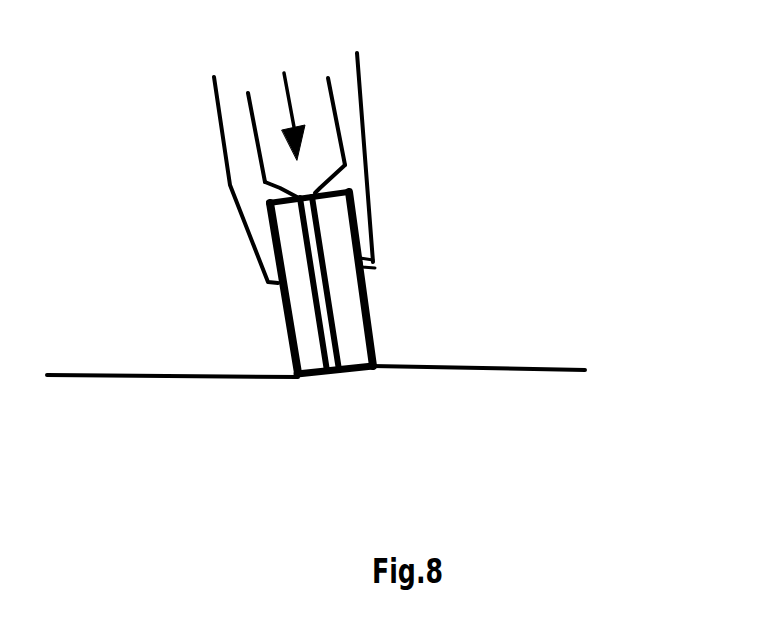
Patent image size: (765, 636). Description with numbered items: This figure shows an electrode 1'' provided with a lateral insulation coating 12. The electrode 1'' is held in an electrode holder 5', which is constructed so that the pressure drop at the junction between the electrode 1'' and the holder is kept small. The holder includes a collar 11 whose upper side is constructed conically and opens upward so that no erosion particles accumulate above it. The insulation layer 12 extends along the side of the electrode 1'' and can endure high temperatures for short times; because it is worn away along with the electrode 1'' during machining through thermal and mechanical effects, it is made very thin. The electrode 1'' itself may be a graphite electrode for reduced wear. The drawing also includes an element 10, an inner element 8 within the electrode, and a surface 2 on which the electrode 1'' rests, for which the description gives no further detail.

The electrode holder 5' is at (344, 155).
The pressing tool 10 is at (320, 107).
The collar 11 is at (340, 177).
The electrode 1'' is at (356, 280).
The core element 8 is at (328, 330).
The lateral insulation layer 12 is at (375, 261).
The base surface 2 is at (316, 395).